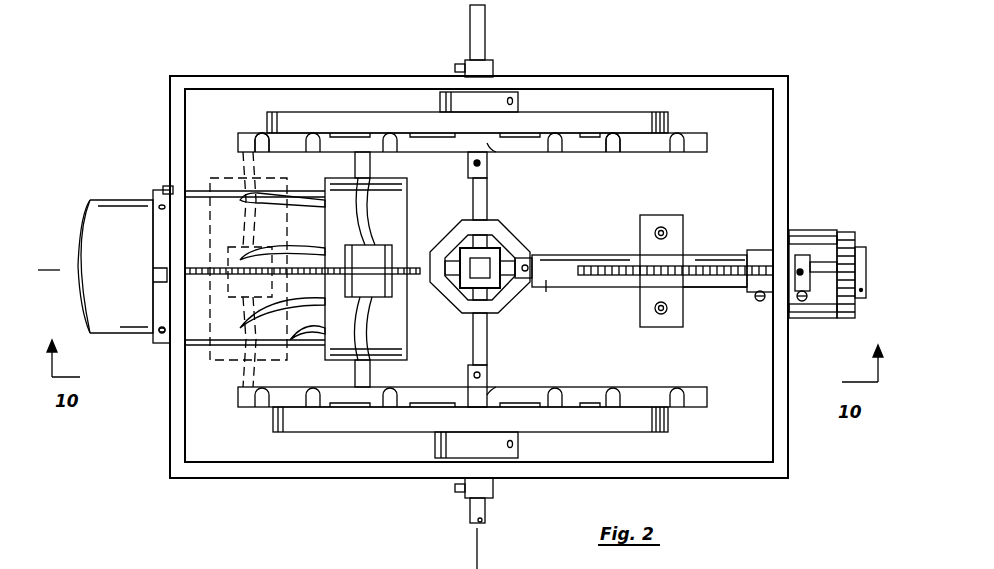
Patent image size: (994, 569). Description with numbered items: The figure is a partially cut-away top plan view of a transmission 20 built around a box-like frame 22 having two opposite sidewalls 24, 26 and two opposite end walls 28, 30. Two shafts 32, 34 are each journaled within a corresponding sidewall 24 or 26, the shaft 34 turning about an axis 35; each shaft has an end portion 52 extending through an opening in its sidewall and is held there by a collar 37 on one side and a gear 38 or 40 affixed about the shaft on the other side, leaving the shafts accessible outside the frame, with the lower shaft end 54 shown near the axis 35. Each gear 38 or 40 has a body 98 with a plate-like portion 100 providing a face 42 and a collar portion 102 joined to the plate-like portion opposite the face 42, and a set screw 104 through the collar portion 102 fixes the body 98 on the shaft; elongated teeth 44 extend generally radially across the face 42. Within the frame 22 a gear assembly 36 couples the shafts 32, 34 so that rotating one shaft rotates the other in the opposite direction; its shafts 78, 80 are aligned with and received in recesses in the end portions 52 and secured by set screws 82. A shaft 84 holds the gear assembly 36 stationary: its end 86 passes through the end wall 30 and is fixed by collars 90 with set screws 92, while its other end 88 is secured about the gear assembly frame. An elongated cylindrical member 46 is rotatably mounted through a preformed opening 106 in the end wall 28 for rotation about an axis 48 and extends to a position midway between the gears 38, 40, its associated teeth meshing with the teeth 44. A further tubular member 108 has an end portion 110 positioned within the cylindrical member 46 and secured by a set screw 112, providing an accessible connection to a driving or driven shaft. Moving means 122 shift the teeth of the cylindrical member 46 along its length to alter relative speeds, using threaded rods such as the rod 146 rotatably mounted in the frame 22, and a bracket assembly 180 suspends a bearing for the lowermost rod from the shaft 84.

The transmission 20 is at (670, 70).
The frame 22 is at (270, 78).
The sidewall 24 is at (343, 88).
The sidewall 26 is at (347, 478).
The end wall 28 is at (170, 398).
The end wall 30 is at (790, 415).
The shaft 32 is at (478, 28).
The shaft 34 is at (487, 508).
The axis 35 is at (480, 540).
The gear assembly 36 is at (505, 245).
The collar 37 is at (493, 68).
The gear 38 is at (668, 118).
The gear 40 is at (668, 422).
The face 42 is at (498, 150).
The teeth 44 is at (250, 134).
The cylindrical member 46 is at (162, 340).
The axis 48 is at (48, 268).
The end portion 52 is at (468, 160).
The shaft end 54 is at (468, 516).
The shaft 78 is at (473, 200).
The shaft 80 is at (473, 330).
The set screw 82 is at (482, 164).
The shaft 84 is at (575, 255).
The end 86 is at (728, 290).
The end 88 is at (549, 299).
The collars 90 is at (800, 250).
The set screws 92 is at (802, 302).
The gear body 98 is at (345, 125).
The plate-like portion 100 is at (590, 125).
The collar portion 102 is at (440, 98).
The set screw 104 is at (515, 102).
The opening 106 is at (162, 188).
The tubular member 108 is at (86, 315).
The end portion 110 is at (132, 200).
The set screw 112 is at (158, 328).
The moving means 122 is at (820, 230).
The threaded rod 146 is at (195, 270).
The bracket assembly 180 is at (663, 215).